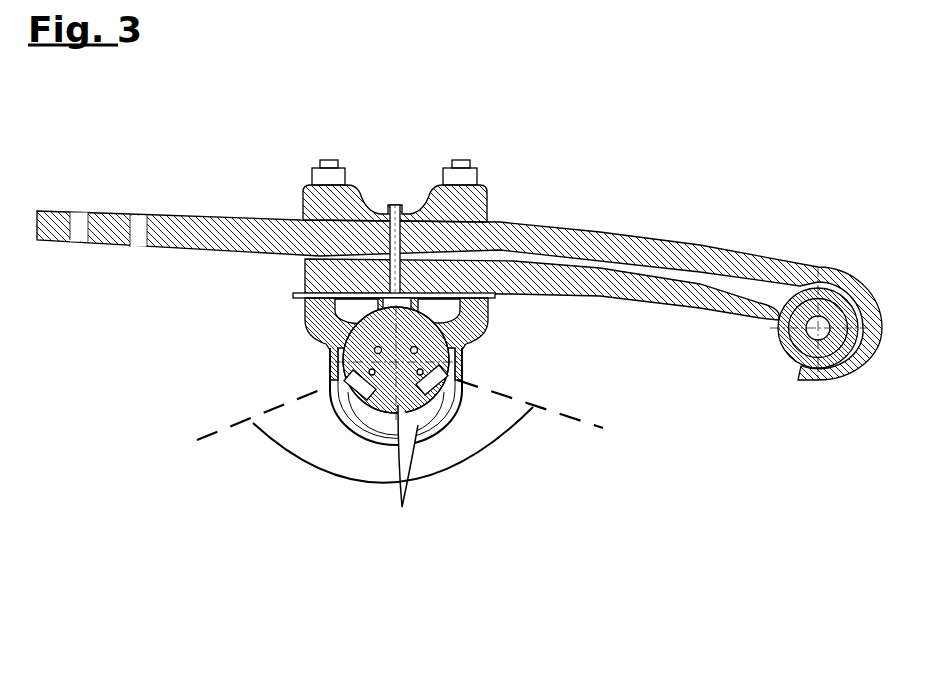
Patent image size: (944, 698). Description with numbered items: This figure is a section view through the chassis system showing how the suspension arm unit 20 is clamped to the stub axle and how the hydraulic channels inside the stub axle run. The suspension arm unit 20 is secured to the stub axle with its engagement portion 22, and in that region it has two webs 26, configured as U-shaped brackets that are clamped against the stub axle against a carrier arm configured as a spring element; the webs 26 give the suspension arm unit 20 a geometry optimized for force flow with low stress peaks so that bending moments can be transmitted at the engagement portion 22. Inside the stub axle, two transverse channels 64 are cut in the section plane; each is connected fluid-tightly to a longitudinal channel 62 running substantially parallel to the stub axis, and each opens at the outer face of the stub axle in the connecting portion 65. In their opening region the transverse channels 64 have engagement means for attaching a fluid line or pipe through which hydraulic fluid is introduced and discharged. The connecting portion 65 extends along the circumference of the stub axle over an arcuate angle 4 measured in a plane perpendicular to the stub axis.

The suspension arm unit 20 is at (577, 225).
The engagement portion 22 is at (457, 333).
The webs 26 is at (337, 372).
The longitudinal channel 62 is at (397, 334).
The transverse channels 64 is at (402, 507).
The first connecting portion 65 is at (398, 430).
The pivot range arc 4 is at (493, 447).